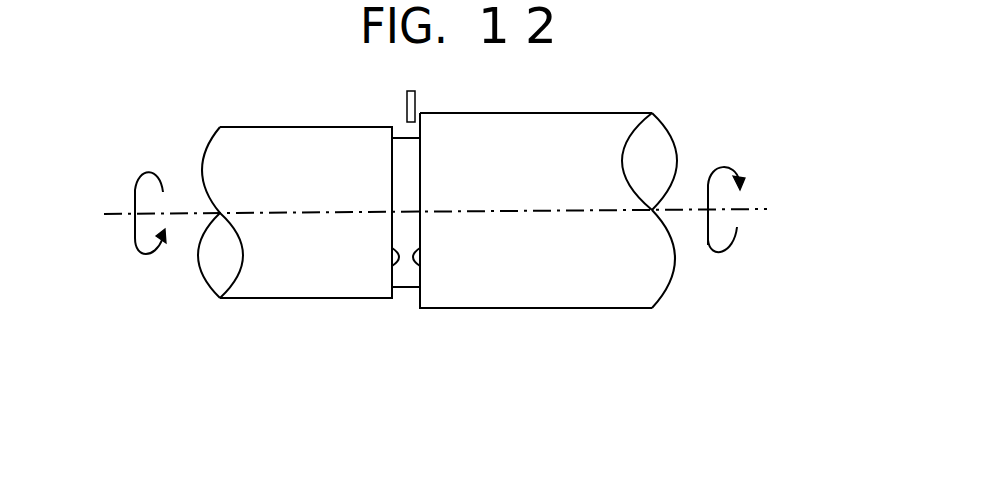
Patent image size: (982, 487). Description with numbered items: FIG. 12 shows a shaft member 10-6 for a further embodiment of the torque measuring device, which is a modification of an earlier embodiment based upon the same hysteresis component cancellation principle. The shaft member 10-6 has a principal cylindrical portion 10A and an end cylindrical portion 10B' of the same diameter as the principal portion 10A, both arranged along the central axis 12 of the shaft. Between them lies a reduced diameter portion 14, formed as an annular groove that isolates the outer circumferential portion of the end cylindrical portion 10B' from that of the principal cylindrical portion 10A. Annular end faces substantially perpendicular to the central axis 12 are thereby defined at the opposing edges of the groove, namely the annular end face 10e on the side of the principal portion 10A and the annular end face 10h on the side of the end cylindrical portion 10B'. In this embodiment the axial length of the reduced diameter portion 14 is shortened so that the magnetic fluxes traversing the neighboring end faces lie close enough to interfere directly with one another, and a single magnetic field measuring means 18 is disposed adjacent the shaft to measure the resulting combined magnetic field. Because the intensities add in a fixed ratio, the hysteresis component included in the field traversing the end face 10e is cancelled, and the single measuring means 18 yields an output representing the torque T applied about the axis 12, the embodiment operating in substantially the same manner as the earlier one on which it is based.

The shaft member 10-6 is at (422, 220).
The principal cylindrical portion 10A is at (308, 300).
The end cylindrical portion 10B' is at (548, 241).
The annular end face 10e is at (392, 250).
The annular end face 10h is at (420, 250).
The central axis 12 is at (522, 212).
The reduced diameter portion 14 is at (410, 288).
The magnetic field measuring means 18 is at (407, 96).
The torque T is at (136, 186).